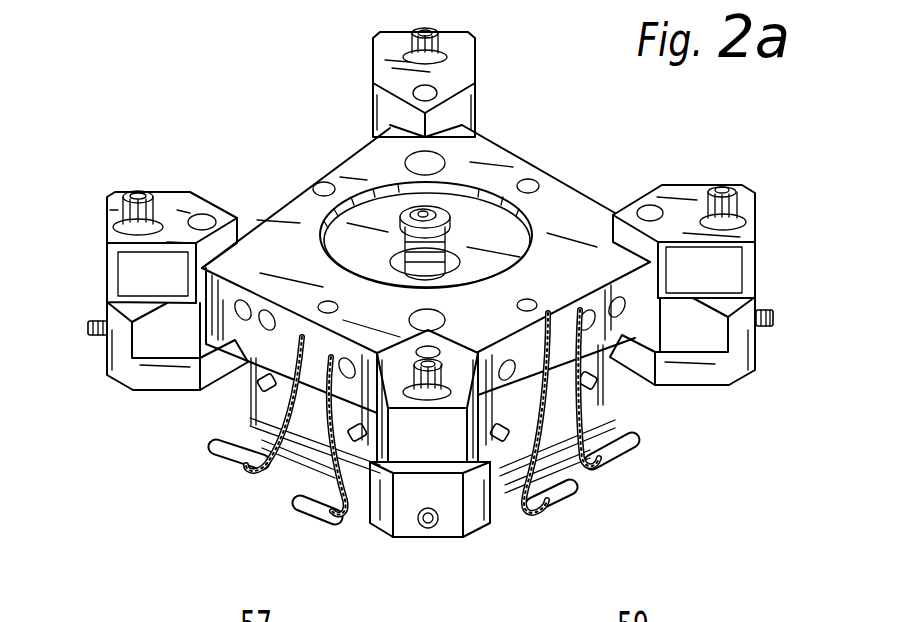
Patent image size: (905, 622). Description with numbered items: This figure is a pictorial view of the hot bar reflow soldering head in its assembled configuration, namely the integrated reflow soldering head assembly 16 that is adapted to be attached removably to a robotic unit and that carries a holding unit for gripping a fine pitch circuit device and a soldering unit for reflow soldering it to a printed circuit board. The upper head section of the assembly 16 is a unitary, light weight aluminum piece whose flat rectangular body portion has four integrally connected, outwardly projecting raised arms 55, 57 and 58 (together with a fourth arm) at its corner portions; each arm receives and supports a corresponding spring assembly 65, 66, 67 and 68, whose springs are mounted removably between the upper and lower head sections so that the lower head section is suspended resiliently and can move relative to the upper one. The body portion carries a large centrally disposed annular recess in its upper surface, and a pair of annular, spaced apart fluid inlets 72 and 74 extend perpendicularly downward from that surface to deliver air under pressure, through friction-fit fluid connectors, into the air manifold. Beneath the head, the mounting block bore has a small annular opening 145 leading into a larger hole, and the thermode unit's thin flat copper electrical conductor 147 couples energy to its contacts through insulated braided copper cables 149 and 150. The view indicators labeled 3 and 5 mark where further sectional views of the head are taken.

The integrated reflow soldering head assembly 16 is at (160, 560).
The fluid inlet 72 is at (332, 300).
The fluid inlet 74 is at (443, 163).
The raised arm 58 is at (366, 51).
The spring assembly 68 is at (348, 120).
The raised arm 57 is at (98, 194).
The spring assembly 67 is at (78, 315).
The raised arm 55 is at (774, 228).
The spring assembly 65 is at (778, 294).
The spring assembly 66 is at (350, 545).
The electrical conductor 147 is at (517, 507).
The insulated braided copper cable 150 is at (570, 470).
The small annular opening 145 is at (600, 463).
The insulated braided copper cable 149 is at (580, 413).
The section line 3- 3 is at (683, 147).
The view line 5- 5 is at (720, 187).